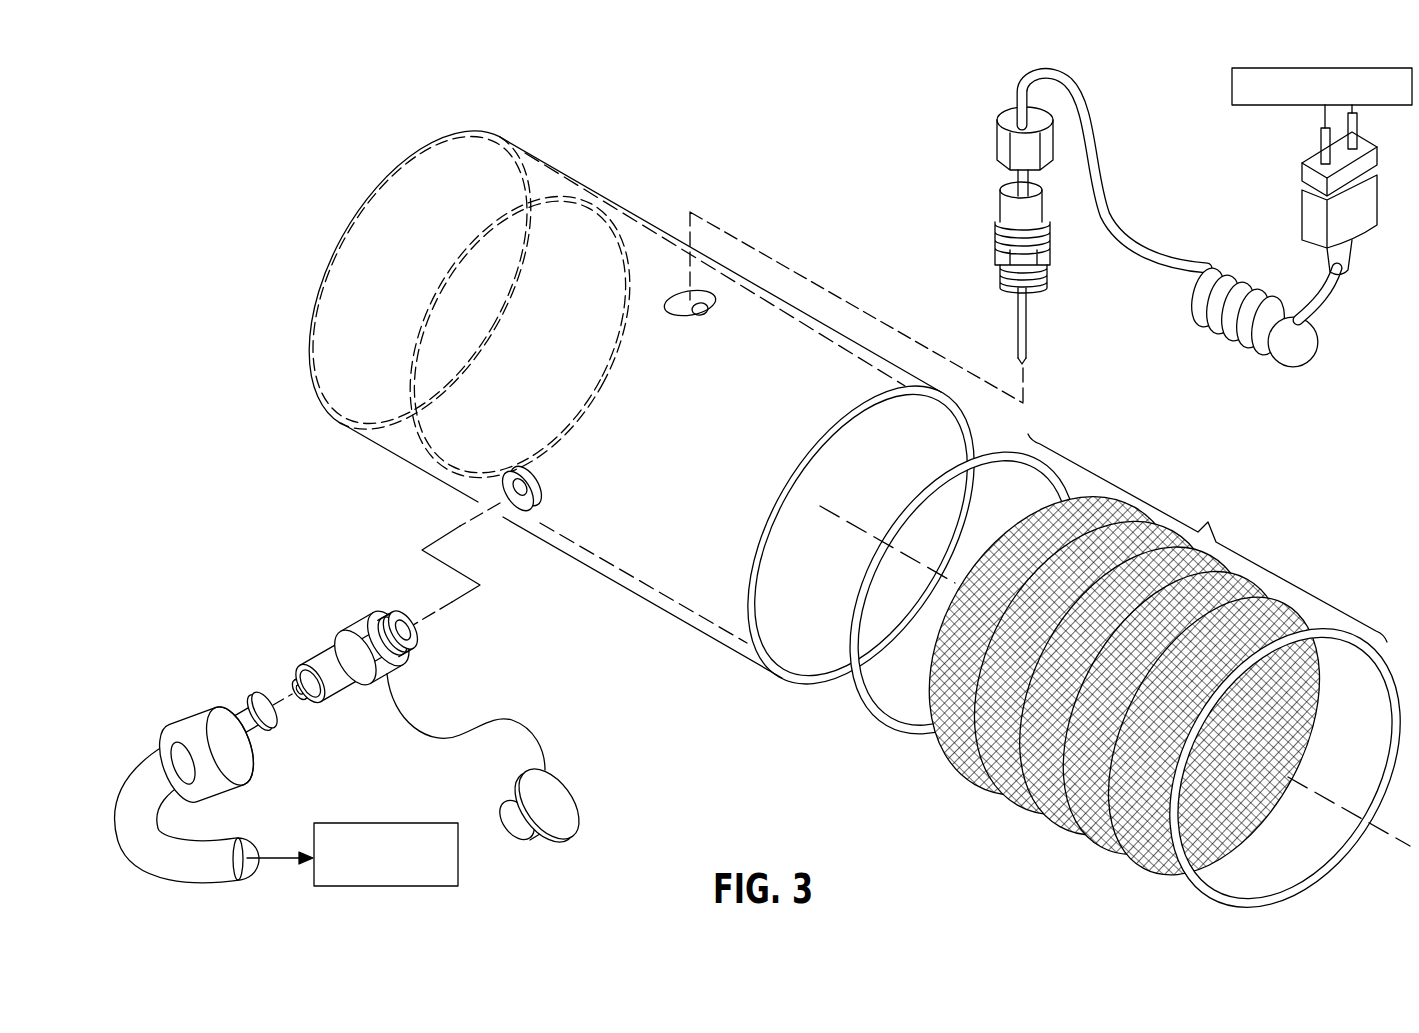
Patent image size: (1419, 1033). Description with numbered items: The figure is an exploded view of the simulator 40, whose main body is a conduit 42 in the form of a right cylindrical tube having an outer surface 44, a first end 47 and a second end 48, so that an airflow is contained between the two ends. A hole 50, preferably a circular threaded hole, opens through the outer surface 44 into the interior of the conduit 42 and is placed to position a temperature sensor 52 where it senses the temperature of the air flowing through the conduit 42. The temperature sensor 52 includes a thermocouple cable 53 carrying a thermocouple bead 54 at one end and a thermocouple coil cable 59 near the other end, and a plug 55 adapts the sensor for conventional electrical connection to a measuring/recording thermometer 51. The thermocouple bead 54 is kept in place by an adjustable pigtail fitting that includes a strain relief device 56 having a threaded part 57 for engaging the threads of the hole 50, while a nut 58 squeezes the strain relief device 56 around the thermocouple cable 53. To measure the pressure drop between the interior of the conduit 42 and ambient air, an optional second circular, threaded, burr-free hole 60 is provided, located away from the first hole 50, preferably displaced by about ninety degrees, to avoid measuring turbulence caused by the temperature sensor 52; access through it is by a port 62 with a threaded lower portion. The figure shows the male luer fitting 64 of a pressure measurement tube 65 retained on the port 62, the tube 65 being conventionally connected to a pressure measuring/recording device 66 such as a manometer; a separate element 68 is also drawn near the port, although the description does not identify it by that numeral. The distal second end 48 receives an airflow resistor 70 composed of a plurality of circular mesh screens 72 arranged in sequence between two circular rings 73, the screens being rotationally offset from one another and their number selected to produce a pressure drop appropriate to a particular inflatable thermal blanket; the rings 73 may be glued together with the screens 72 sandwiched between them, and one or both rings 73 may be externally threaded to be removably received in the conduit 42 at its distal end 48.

The simulator 40 is at (730, 207).
The conduit 42 is at (641, 220).
The outer surface 44 is at (690, 622).
The first end 47 is at (364, 179).
The second end 48 is at (828, 700).
The hole 50 is at (704, 311).
The thermometer 51 is at (1231, 92).
The temperature sensor 52 is at (1045, 229).
The thermocouple cable 53 is at (1043, 328).
The thermocouple bead 54 is at (1025, 365).
The plug 55 is at (1305, 216).
The strain relief device 56 is at (996, 240).
The threaded part 57 is at (999, 278).
The nut 58 is at (993, 144).
The thermocouple coil cable 59 is at (1265, 366).
The second hole 60 is at (535, 482).
The port 62 is at (356, 614).
The male luer fitting 64 is at (188, 706).
The pressure measurement tube 65 is at (160, 858).
The pressure measuring/recording device 66 is at (352, 823).
The stopper plug 68 is at (580, 826).
The airflow resistor 70 is at (1207, 538).
The circular mesh screens 72 is at (1000, 792).
The circular rings 73 is at (1111, 680).